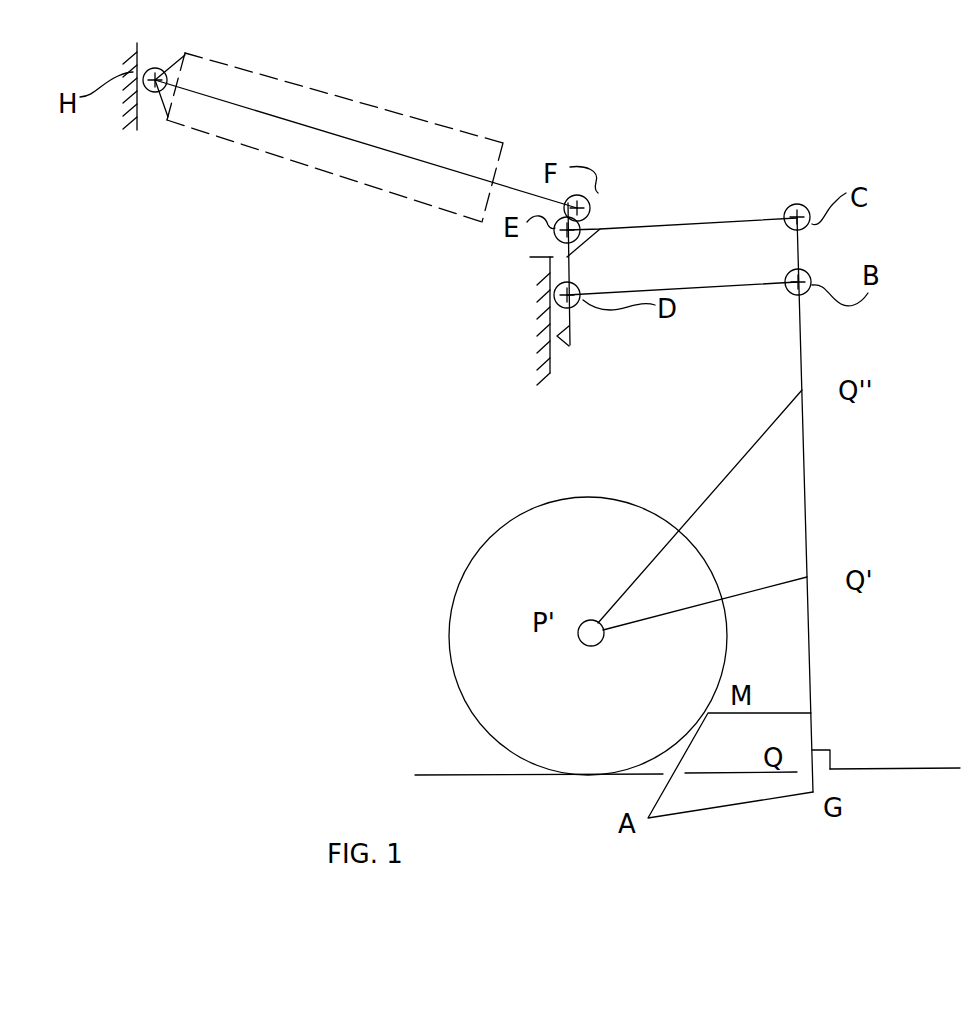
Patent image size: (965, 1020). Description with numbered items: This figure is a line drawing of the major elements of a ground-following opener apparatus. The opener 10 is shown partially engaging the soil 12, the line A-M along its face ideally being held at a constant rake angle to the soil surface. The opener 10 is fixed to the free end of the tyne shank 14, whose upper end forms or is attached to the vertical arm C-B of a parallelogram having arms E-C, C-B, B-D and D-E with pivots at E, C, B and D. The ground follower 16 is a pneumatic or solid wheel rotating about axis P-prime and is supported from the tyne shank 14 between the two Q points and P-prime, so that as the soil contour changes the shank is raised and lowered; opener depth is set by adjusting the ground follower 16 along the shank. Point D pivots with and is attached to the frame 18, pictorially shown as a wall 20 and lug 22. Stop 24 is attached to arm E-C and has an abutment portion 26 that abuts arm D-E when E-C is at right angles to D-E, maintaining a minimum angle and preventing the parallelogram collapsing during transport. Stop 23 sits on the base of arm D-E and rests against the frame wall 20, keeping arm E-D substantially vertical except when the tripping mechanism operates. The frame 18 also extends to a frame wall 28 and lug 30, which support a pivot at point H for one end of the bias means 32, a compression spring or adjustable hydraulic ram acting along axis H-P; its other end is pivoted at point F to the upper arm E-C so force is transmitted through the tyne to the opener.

The opener 10 is at (838, 721).
The soil 12 is at (687, 787).
The tyne shank 14 is at (810, 515).
The ground follower 16 is at (560, 636).
The frame 18 is at (528, 319).
The wall 20 is at (535, 357).
The lug 22 is at (543, 285).
The stop 23 is at (573, 332).
The stop 24 is at (595, 228).
The abutment portion 26 is at (521, 259).
The frame wall 28 is at (127, 92).
The lug 30 is at (178, 57).
The bias means 32 is at (391, 137).